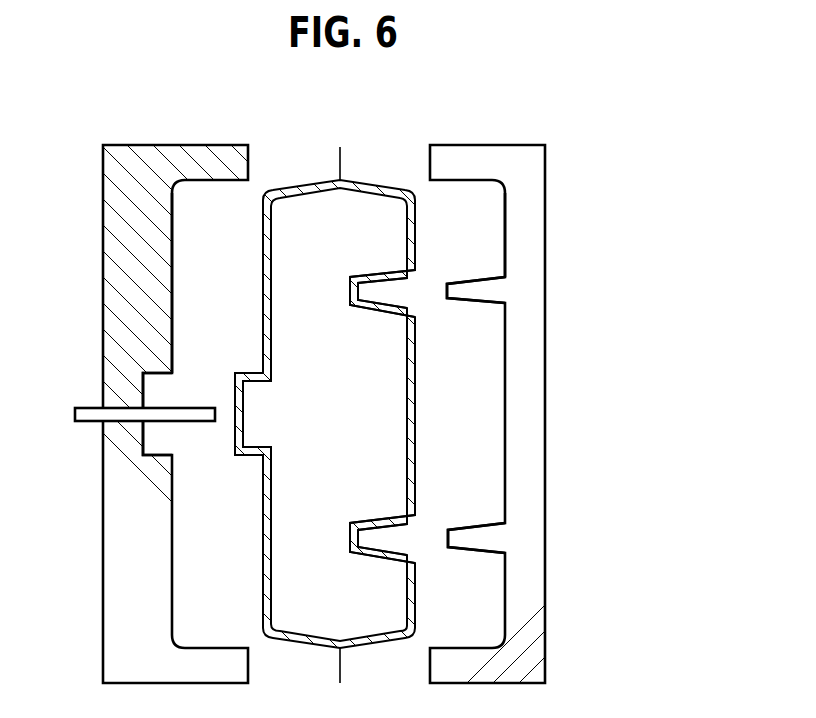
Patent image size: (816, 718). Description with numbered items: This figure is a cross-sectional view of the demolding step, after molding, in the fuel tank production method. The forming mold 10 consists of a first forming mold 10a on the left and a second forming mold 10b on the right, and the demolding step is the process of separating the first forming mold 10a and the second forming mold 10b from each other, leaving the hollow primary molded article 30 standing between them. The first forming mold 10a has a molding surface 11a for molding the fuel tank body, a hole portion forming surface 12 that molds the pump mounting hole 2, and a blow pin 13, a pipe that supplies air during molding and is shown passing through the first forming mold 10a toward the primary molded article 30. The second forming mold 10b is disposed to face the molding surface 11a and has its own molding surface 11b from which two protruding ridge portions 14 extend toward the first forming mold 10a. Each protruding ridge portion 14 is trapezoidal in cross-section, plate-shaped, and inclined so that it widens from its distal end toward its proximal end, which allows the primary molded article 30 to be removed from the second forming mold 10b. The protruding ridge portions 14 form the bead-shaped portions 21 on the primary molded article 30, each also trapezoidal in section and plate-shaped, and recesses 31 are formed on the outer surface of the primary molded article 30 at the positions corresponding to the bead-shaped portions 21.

The forming mold 10 is at (408, 424).
The first forming mold 10a is at (117, 172).
The second forming mold 10b is at (545, 172).
The molding surface 11a is at (173, 255).
The molding surface 11b is at (505, 255).
The hole portion forming surface 12 is at (147, 388).
The blow pin 13 is at (92, 422).
The protruding ridge portion 14 is at (475, 293).
The pump mounting hole 2 is at (235, 440).
The bead-shaped portion 21 is at (365, 303).
The primary molded article 30 is at (382, 160).
The recess 31 is at (390, 287).